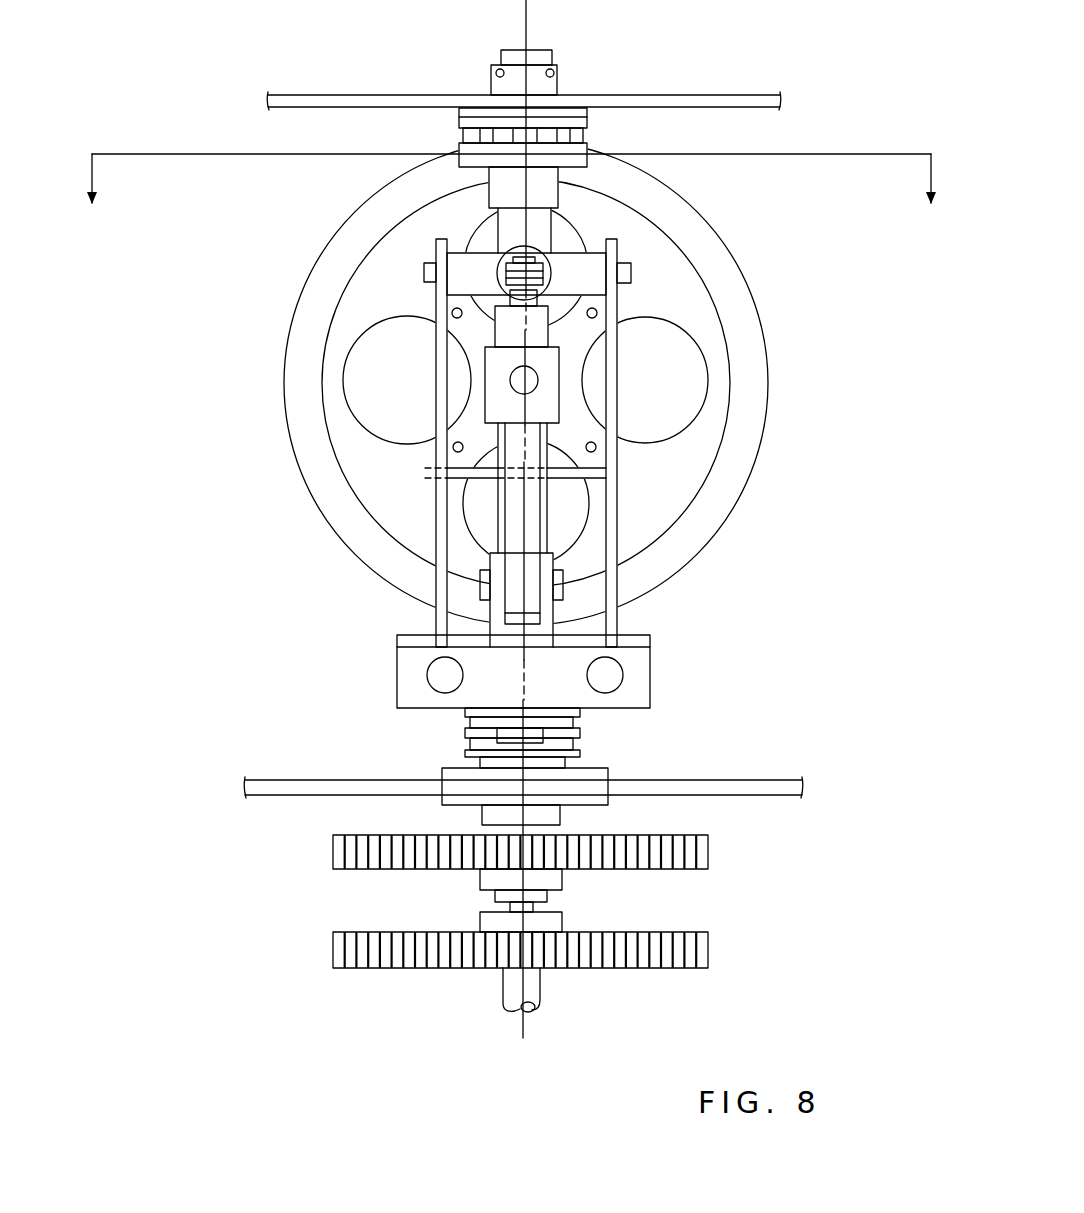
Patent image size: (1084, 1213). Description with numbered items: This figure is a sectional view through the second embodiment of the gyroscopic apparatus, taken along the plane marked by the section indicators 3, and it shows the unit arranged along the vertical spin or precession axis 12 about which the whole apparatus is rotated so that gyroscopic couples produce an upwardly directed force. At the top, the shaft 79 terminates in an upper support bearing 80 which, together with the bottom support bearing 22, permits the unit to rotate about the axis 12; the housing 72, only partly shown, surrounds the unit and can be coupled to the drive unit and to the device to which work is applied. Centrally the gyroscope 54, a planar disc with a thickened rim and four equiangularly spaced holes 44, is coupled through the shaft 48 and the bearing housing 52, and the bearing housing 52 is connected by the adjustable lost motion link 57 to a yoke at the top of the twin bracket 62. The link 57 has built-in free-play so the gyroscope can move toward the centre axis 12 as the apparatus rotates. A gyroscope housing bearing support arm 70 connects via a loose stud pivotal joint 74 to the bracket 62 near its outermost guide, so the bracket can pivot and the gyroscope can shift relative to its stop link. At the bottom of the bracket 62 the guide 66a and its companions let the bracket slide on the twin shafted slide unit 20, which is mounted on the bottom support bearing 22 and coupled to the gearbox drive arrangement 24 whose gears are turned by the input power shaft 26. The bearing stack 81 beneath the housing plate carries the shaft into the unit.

The section line 3- 3 is at (510, 198).
The vertical spin or precession axis 12 is at (520, 17).
The upper support bearing 80 is at (562, 79).
The housing 72 is at (762, 95).
The upper bearing stack 81 is at (523, 180).
The gyroscope 54 is at (683, 307).
The holes 44 is at (618, 157).
The shaft 79 is at (507, 229).
The gyroscope housing bearing support arm 70 is at (613, 414).
The adjustable lost motion link 57 is at (557, 267).
The bearing housing 52 is at (566, 322).
The shaft 48 is at (540, 380).
The twin bracket 62 is at (436, 468).
The loose stud pivotal joint 74 is at (608, 606).
The twin shafted slide unit 20 is at (610, 670).
The guide 66a is at (632, 695).
The bottom support bearing 22 is at (490, 818).
The gearbox drive arrangement 24 is at (714, 897).
The input power shaft 26 is at (532, 992).